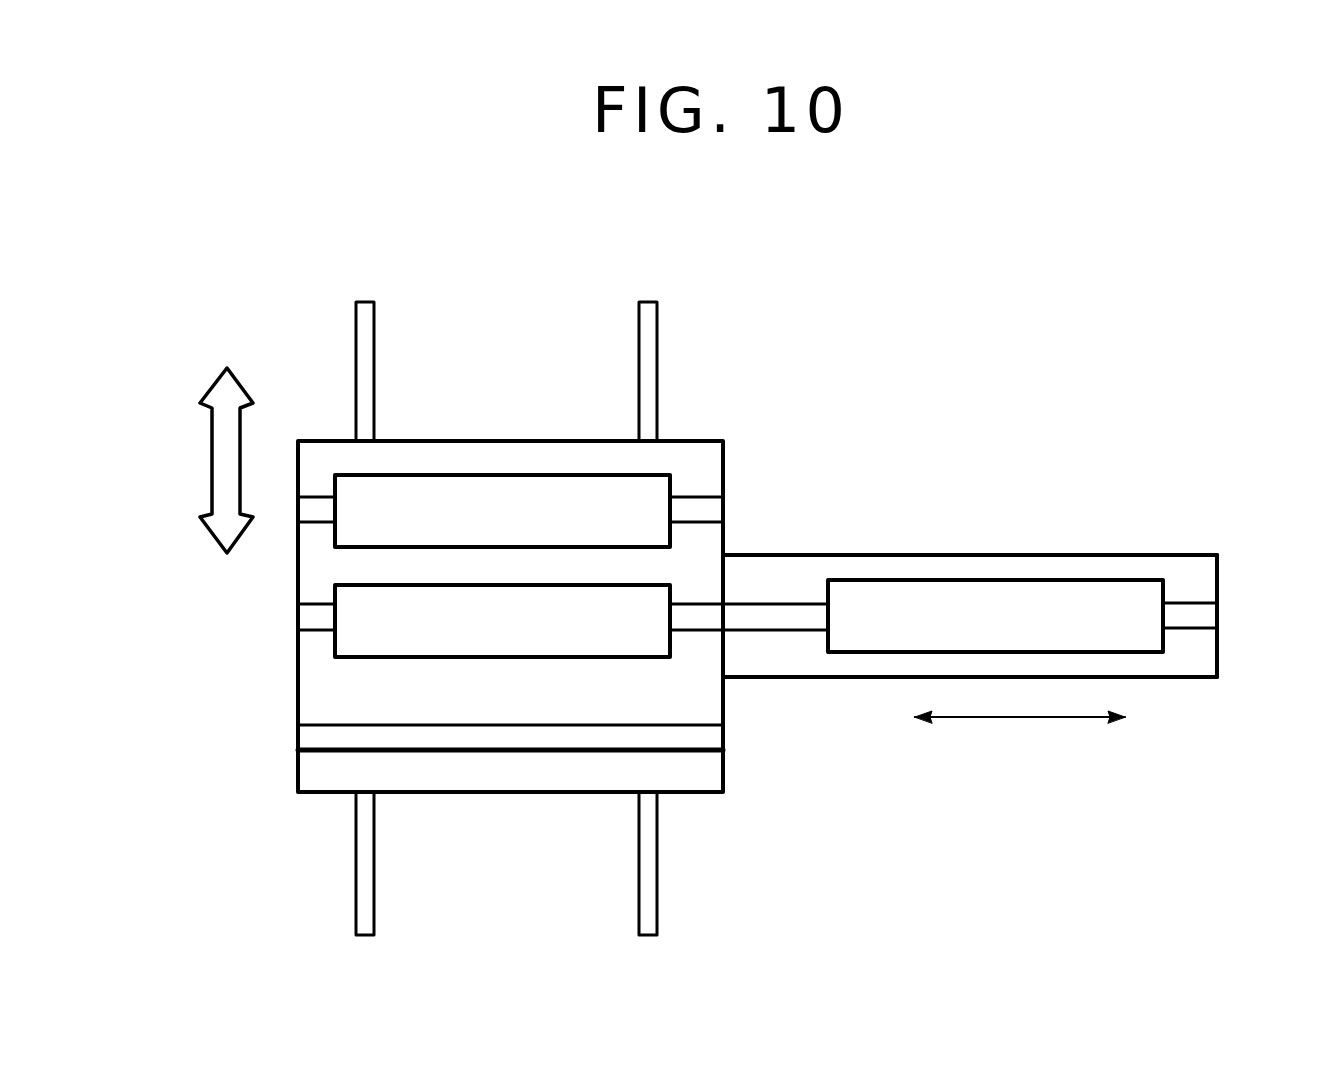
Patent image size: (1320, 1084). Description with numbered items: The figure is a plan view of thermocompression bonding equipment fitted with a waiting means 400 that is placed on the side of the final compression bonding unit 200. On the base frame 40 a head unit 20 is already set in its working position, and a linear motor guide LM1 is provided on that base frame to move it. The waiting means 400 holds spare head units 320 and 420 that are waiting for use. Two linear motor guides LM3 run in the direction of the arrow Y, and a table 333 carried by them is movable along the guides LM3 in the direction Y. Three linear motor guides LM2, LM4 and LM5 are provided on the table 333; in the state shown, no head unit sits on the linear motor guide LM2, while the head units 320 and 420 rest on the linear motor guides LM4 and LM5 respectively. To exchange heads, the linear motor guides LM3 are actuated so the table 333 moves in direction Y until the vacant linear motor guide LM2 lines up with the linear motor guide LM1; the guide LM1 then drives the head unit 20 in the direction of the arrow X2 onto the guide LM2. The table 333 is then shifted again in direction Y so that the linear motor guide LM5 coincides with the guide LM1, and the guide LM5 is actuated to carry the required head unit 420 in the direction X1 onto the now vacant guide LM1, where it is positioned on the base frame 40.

The waiting means 400 is at (284, 772).
The linear motor guides LM3 is at (356, 328).
The table 333 is at (328, 780).
The linear motor guide LM2 is at (512, 740).
The head unit 420 is at (658, 474).
The linear motor guide LM5 is at (710, 510).
The head unit 320 is at (335, 652).
The linear motor guide LM4 is at (698, 623).
The final compression bonding unit 200 is at (1199, 684).
The base frame 40 is at (1218, 558).
The head unit 20 is at (1067, 578).
The linear motor guide LM1 is at (1190, 617).
The arrow Y is at (222, 454).
The direction X1 is at (1085, 720).
The direction X2 is at (958, 720).